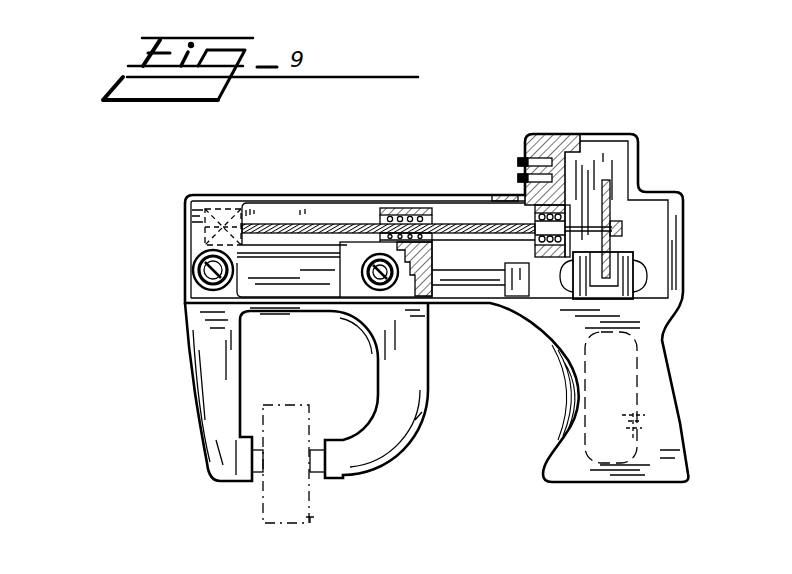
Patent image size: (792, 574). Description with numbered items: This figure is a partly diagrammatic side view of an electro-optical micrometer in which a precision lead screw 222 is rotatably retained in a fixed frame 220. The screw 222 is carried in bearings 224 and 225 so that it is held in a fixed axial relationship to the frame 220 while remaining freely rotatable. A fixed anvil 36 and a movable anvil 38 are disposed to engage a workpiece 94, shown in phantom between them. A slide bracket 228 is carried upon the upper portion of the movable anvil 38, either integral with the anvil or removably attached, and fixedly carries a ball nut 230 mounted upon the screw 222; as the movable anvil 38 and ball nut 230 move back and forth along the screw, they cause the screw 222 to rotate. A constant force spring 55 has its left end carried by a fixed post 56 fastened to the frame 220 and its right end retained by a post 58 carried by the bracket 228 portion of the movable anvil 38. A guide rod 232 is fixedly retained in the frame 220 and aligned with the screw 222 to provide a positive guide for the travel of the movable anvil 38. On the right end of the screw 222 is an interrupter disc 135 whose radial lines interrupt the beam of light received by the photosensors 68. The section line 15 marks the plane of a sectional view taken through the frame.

The section line 15 is at (623, 28).
The fixed anvil 36 is at (207, 420).
The movable anvil 38 is at (407, 437).
The constant force spring 55 is at (307, 254).
The fixed post 56 is at (195, 271).
The post 58 is at (372, 288).
The photosensors 68 is at (648, 255).
The workpiece 94 is at (316, 512).
The interrupter disc 135 is at (607, 193).
The fixed frame 220 is at (672, 237).
The precision lead screw 222 is at (316, 186).
The bearing 224 is at (215, 210).
The bearing 225 is at (555, 207).
The slide bracket 228 is at (347, 249).
The ball nut 230 is at (402, 208).
The guide rod 232 is at (478, 281).